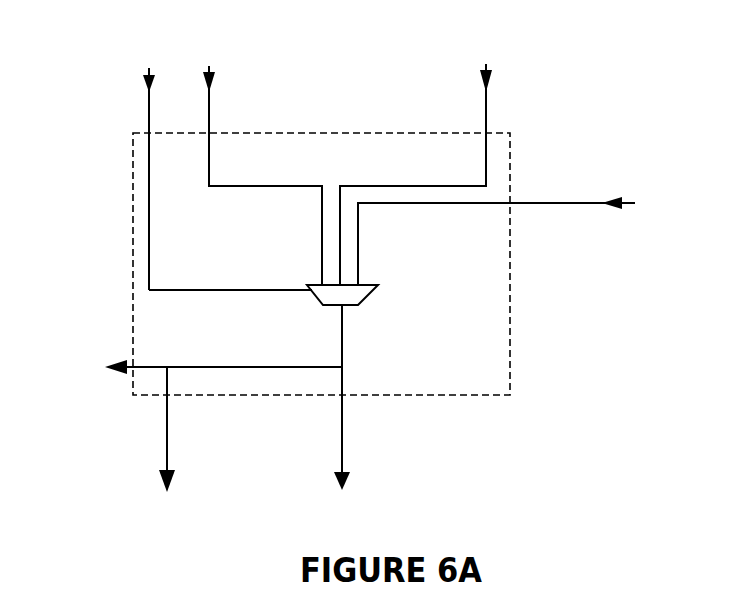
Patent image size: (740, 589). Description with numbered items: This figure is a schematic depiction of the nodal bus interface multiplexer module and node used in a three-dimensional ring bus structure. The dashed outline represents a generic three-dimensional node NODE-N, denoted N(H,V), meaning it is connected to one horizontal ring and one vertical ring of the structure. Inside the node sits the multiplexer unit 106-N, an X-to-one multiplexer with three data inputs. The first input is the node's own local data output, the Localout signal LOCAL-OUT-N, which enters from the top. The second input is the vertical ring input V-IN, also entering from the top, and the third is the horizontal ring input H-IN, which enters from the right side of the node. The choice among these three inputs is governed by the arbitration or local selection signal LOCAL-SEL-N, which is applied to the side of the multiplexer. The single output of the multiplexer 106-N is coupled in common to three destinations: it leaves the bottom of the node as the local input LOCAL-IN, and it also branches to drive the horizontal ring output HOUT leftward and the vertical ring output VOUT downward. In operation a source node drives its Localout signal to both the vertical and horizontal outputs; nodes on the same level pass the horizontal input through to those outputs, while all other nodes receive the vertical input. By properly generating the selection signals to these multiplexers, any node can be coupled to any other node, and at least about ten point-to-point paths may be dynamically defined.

The multiplexer unit 106-N is at (367, 303).
The node N(H,V) NODE-N is at (512, 362).
The local selection signal (ARB-N) LOCAL-SEL-N is at (191, 155).
The Localout signal (Dout-N) LOCAL-OUT-N is at (263, 151).
The Vin signal V-IN is at (420, 153).
The Hin signal H-IN is at (517, 239).
The Local in signal LOCAL-IN is at (356, 414).
The Hout signal HOUT is at (189, 370).
The Vout signal VOUT is at (172, 445).